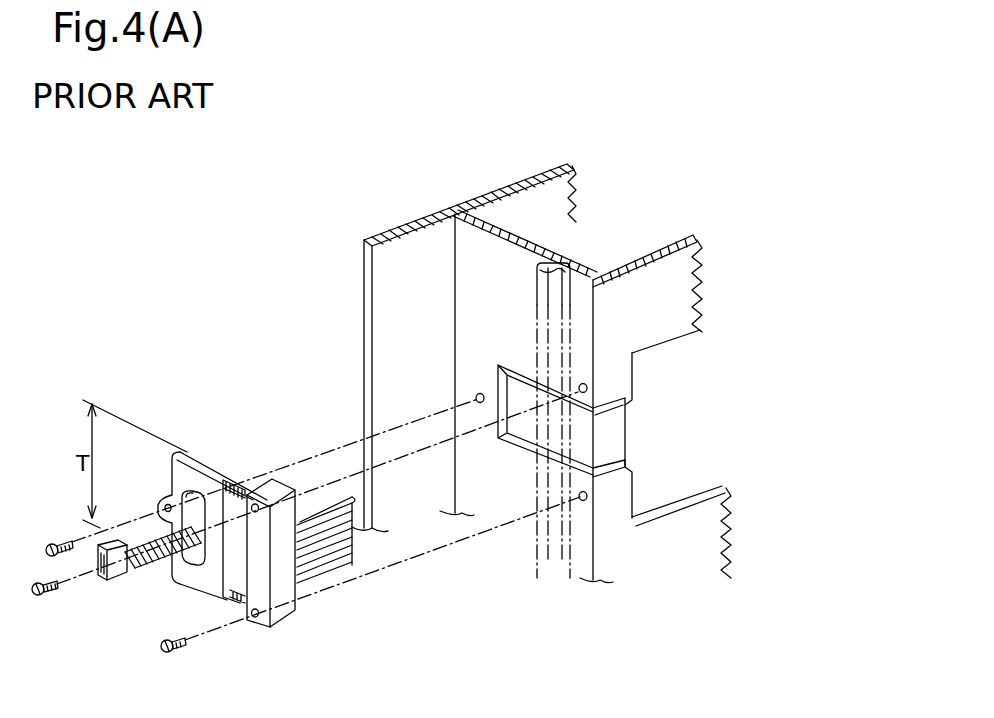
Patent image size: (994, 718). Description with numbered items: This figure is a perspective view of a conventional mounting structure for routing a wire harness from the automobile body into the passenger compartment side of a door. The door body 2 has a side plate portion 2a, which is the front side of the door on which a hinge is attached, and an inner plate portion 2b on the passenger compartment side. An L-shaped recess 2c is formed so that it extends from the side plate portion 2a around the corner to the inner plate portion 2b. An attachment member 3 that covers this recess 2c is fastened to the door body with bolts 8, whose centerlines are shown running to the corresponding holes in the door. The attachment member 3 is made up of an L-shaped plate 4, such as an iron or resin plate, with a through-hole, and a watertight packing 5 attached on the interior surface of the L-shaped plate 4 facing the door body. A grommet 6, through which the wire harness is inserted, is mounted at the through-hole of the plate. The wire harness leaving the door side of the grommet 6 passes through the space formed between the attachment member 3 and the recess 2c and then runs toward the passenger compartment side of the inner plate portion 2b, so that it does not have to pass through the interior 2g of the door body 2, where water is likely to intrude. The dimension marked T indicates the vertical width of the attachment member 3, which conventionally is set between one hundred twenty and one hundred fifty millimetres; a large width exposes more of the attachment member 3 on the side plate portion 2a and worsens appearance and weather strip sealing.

The door body 2 is at (422, 205).
The side plate portion 2a is at (495, 263).
The inner plate portion 2b is at (637, 282).
The L-shaped recess 2c is at (583, 443).
The interior of the door body 2g is at (537, 215).
The attachment member 3 is at (253, 625).
The L-shaped plate 4 is at (192, 473).
The watertight packing 5 is at (235, 478).
The grommet 6 is at (143, 562).
The bolts 8 is at (52, 540).